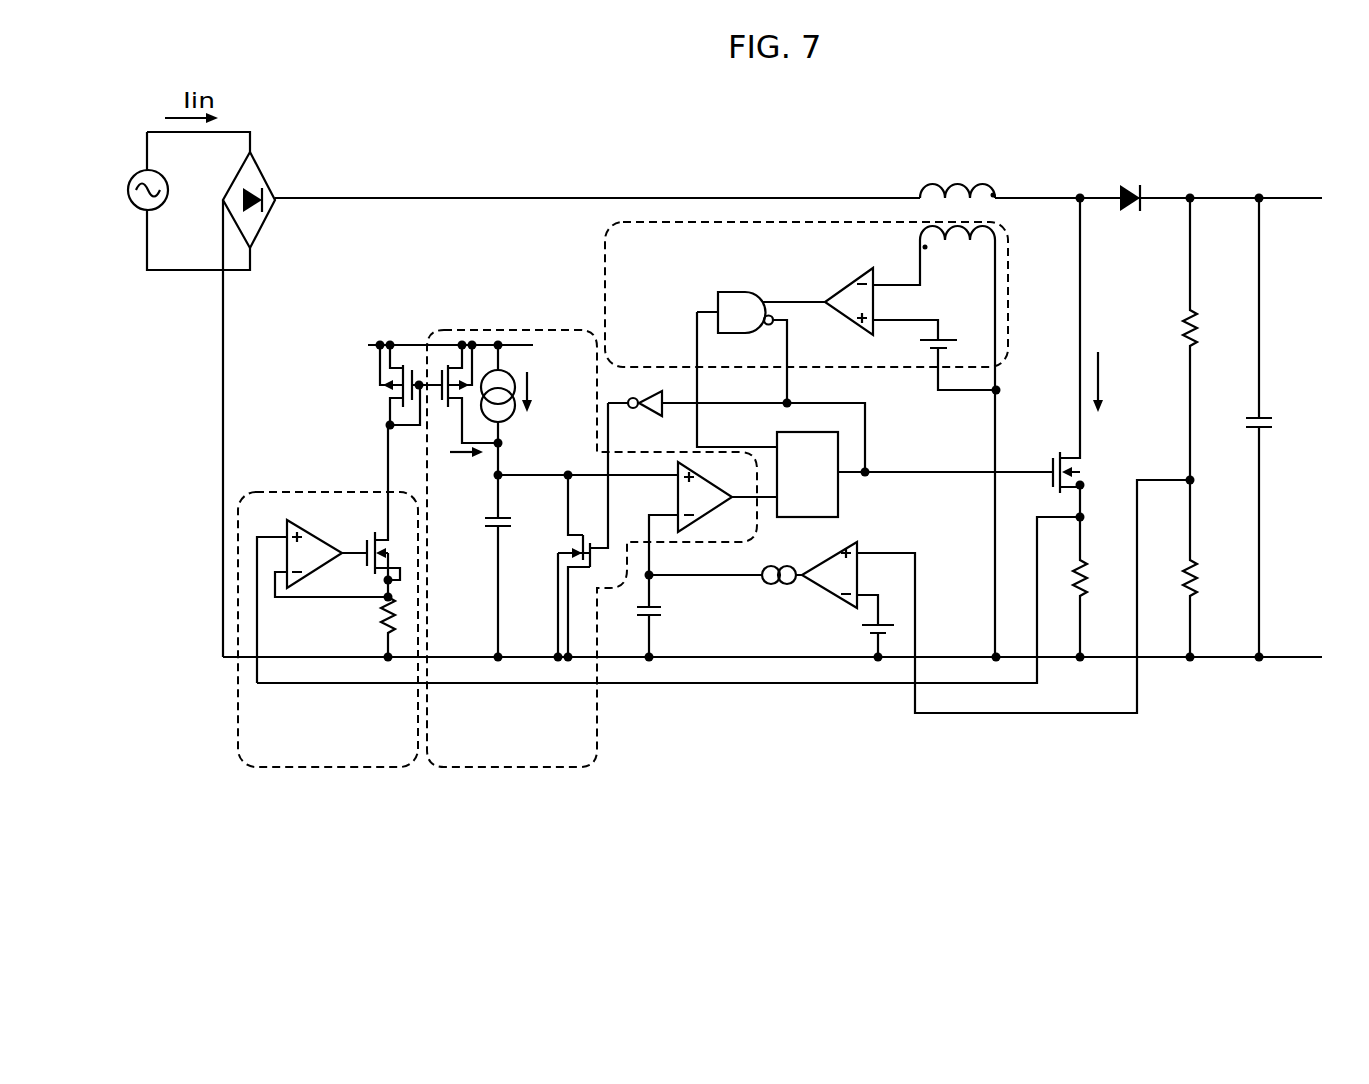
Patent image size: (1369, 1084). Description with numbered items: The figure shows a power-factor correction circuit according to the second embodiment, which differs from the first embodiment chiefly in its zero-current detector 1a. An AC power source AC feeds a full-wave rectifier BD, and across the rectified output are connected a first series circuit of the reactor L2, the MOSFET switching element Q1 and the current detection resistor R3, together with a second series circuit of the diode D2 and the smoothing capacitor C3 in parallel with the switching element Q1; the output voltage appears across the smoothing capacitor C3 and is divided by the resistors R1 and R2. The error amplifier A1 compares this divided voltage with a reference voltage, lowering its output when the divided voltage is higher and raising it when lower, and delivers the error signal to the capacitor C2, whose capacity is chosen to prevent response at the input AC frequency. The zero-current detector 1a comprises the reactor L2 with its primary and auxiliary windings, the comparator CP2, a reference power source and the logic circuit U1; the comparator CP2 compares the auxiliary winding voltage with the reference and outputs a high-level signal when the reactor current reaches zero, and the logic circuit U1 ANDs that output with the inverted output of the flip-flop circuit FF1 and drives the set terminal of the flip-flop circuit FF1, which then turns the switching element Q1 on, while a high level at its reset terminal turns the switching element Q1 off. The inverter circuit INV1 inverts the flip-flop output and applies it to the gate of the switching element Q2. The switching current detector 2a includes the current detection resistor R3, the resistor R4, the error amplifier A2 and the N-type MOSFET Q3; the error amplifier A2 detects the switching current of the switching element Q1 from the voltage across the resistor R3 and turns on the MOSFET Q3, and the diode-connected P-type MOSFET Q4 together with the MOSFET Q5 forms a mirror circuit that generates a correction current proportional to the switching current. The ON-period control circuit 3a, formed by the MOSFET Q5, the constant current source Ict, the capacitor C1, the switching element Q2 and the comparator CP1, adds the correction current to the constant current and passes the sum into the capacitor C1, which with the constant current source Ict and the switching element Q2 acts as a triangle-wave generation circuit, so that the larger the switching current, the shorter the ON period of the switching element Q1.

The AC power source AC is at (172, 201).
The full-wave rectifier BD is at (270, 182).
The reactor L2 is at (937, 395).
The diode D2 is at (1131, 184).
The switching element Q1 is at (1002, 360).
The resistor R1 is at (1207, 339).
The resistor R2 is at (1207, 567).
The current detection resistor R3 is at (1097, 587).
The smoothing capacitor C3 is at (1277, 427).
The zero-current detector 1a is at (604, 238).
The switching current detector 2a is at (338, 769).
The on-period control circuit 3a is at (519, 769).
The comparator CP2 is at (901, 321).
The logic circuit U1 is at (761, 356).
The inverter circuit INV1 is at (734, 419).
The flip-flop circuit FF1 is at (915, 460).
The comparator CP1 is at (713, 515).
The switching element Q2 is at (564, 530).
The P-type MOSFET Q4 is at (440, 385).
The MOSFET Q5 is at (465, 414).
The constant current source Ict is at (522, 410).
The capacitor C1 is at (566, 549).
The capacitor C2 is at (699, 603).
The error amplifier A1 is at (828, 594).
The error amplifier A2 is at (322, 595).
The N-type MOSFET Q3 is at (394, 505).
The resistor R4 is at (370, 618).